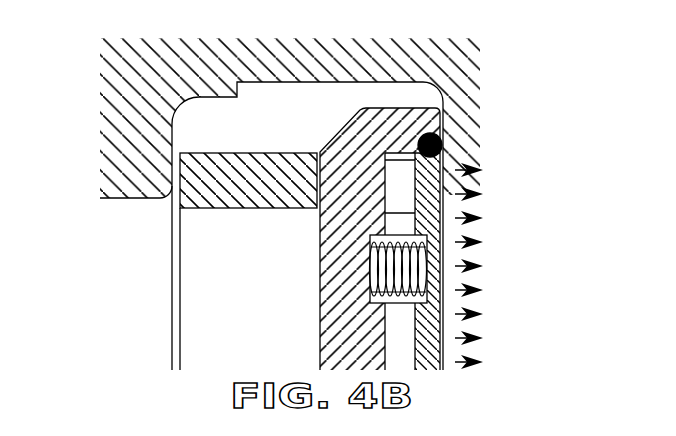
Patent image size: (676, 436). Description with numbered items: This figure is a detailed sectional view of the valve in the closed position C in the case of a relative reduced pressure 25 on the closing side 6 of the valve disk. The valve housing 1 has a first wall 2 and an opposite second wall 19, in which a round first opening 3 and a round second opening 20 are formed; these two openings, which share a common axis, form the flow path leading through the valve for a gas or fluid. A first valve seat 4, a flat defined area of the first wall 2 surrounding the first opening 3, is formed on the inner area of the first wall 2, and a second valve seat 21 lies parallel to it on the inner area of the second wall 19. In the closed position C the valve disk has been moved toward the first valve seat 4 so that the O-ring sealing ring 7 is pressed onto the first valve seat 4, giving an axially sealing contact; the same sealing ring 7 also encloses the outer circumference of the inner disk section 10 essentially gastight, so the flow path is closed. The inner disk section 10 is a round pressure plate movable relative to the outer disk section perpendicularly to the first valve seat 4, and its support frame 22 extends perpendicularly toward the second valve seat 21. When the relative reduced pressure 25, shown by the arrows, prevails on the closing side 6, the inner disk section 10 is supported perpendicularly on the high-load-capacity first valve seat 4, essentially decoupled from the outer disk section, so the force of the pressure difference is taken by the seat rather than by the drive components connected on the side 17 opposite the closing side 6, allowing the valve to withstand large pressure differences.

The valve housing 1 is at (516, 32).
The first wall 2 is at (477, 80).
The first opening 3 is at (501, 316).
The first valve seat 4 is at (460, 128).
The closing side 6 is at (509, 351).
The sealing ring 7 is at (441, 145).
The inner disk section 10 is at (443, 194).
The side opposite the closing side 17 is at (122, 351).
The second wall 19 is at (140, 85).
The second opening 20 is at (175, 317).
The second valve seat 21 is at (188, 137).
The support frame 22 is at (242, 187).
The relative reduced pressure 25 is at (467, 243).
The closed position C is at (338, 127).